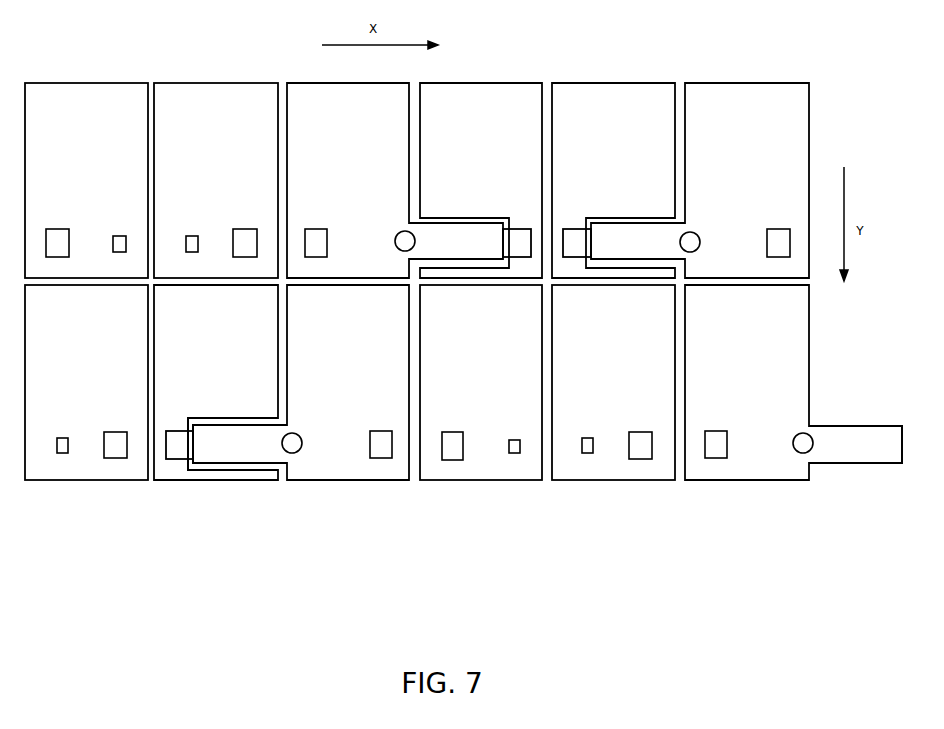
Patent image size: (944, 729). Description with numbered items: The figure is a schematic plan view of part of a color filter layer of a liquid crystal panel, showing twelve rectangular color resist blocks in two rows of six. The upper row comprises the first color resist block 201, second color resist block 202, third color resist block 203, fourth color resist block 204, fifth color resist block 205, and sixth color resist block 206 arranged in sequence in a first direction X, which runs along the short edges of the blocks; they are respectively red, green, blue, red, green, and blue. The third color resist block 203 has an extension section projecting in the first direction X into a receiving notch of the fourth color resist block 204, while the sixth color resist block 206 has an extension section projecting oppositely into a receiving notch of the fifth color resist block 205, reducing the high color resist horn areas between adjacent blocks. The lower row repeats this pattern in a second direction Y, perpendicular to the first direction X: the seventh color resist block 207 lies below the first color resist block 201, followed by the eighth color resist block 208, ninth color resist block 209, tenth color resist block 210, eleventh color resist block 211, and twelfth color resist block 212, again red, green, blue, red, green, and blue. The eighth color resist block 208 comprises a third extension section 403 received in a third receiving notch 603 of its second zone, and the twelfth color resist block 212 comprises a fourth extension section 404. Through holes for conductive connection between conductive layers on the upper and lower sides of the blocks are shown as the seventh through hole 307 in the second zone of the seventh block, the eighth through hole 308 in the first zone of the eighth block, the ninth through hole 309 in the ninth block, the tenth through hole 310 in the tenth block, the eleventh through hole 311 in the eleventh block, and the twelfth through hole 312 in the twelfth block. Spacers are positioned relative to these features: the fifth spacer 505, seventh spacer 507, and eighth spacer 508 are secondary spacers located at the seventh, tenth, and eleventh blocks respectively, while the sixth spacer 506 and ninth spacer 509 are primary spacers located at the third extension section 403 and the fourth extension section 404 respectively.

The first color resist block 201 is at (124, 105).
The second color resist block 202 is at (213, 95).
The third color resist block 203 is at (367, 97).
The fourth color resist block 204 is at (490, 103).
The fifth color resist block 205 is at (608, 103).
The sixth color resist block 206 is at (728, 100).
The seventh color resist block 207 is at (137, 473).
The eighth color resist block 208 is at (233, 480).
The ninth color resist block 209 is at (341, 465).
The tenth color resist block 210 is at (470, 473).
The eleventh color resist block 211 is at (608, 475).
The twelfth color resist block 212 is at (742, 471).
The seventh through hole 307 is at (120, 452).
The eighth through hole 308 is at (180, 450).
The ninth through hole 309 is at (380, 448).
The tenth through hole 310 is at (457, 450).
The eleventh through hole 311 is at (642, 454).
The twelfth through hole 312 is at (715, 455).
The third extension section 403 is at (230, 448).
The fourth extension section 404 is at (848, 453).
The fifth spacer 505 is at (62, 453).
The sixth spacer 506 is at (293, 452).
The seventh spacer 507 is at (510, 452).
The eighth spacer 508 is at (582, 451).
The ninth spacer 509 is at (798, 450).
The third receiving notch 603 is at (260, 467).